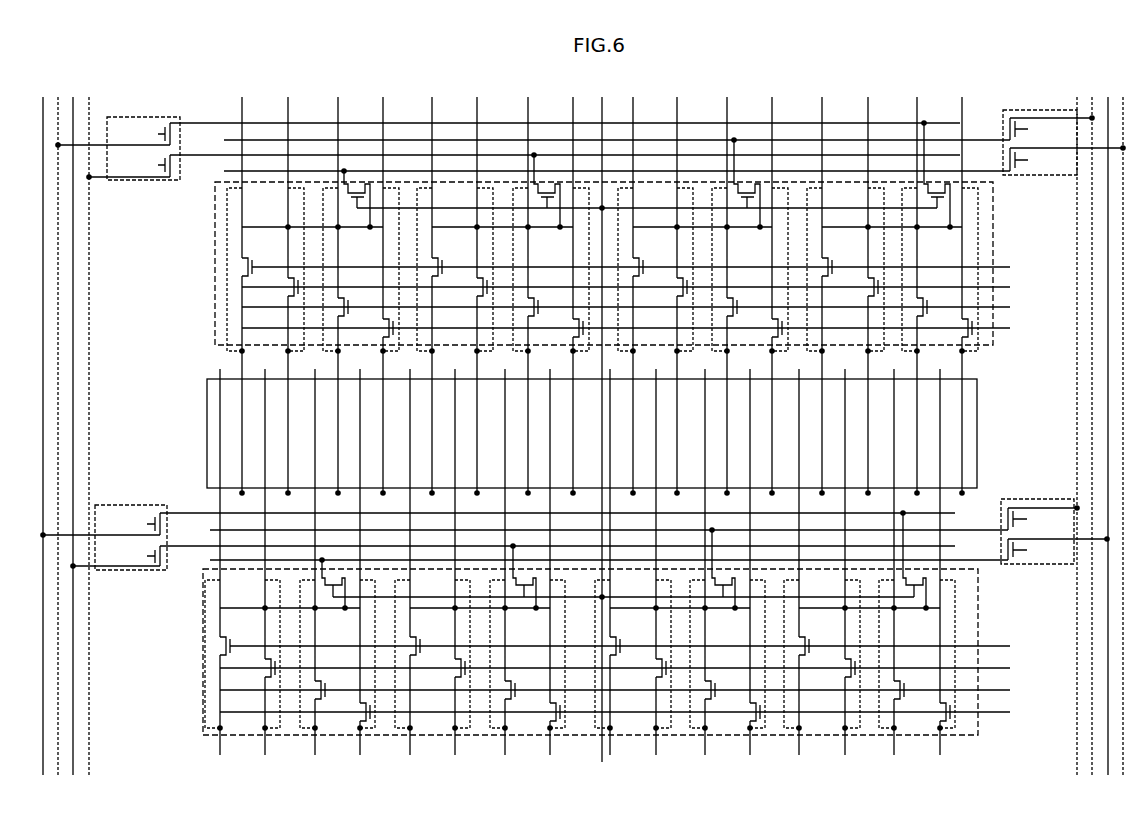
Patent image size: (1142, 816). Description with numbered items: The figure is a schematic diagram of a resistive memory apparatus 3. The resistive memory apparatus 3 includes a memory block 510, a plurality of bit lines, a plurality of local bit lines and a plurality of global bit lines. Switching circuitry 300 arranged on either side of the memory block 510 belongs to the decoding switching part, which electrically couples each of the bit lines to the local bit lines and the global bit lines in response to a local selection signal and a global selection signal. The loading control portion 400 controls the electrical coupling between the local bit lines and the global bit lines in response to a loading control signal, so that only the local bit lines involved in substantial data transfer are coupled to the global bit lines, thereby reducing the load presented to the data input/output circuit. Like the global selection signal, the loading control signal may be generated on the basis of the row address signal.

The resistive memory apparatus 3 is at (202, 78).
The local bit line selection circuit 300 is at (993, 208).
The loading control portion 400 is at (140, 117).
The memory block 510 is at (977, 435).